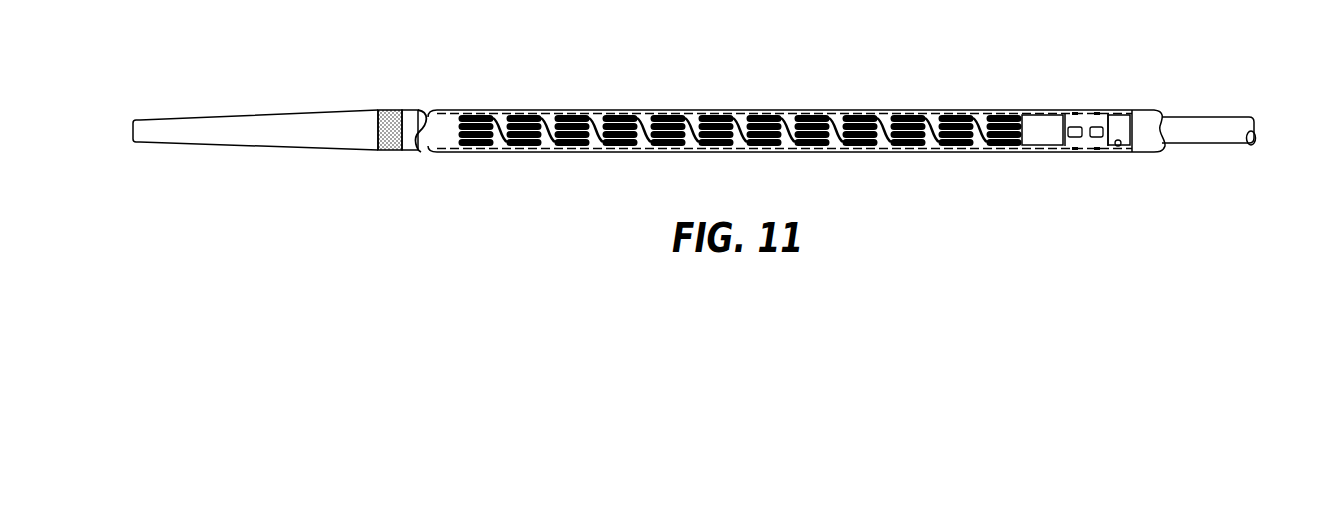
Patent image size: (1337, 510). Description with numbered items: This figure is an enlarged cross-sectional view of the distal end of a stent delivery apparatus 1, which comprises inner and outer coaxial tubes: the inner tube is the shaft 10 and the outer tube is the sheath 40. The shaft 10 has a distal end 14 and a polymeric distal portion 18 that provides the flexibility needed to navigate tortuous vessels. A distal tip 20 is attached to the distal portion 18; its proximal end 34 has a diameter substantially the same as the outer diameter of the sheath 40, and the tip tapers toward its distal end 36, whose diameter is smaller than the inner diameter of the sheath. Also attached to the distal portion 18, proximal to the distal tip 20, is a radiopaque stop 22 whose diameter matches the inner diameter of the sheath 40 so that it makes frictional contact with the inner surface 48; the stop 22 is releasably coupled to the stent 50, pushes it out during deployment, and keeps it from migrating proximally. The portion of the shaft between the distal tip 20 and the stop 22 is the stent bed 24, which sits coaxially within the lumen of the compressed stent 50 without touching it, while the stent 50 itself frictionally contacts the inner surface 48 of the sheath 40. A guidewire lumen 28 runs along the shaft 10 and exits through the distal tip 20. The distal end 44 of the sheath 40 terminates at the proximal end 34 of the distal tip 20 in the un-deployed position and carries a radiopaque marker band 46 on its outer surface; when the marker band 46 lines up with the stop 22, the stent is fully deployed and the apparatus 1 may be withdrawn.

The delivery apparatus 1 is at (891, 78).
The shaft 10 is at (1186, 122).
The distal end of the shaft 14 is at (430, 133).
The distal portion of the shaft 18 is at (1043, 131).
The distal tip 20 is at (263, 147).
The stop 22 is at (1093, 135).
The stent bed 24 is at (882, 152).
The guidewire lumen 28 is at (1264, 129).
The proximal end of the distal tip 34 is at (373, 110).
The distal end of the distal tip 36 is at (138, 122).
The sheath 40 is at (1111, 110).
The distal end of the sheath 44 is at (410, 120).
The radiopaque marker band 46 is at (387, 152).
The inner surface of the sheath 48 is at (1116, 146).
The stent 50 is at (615, 156).